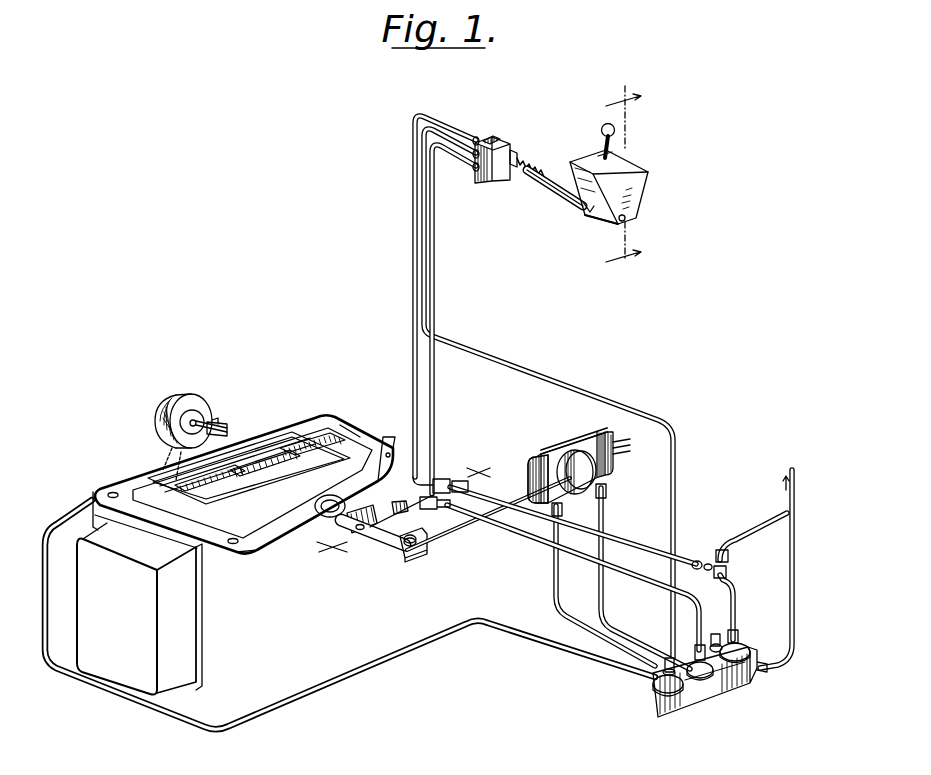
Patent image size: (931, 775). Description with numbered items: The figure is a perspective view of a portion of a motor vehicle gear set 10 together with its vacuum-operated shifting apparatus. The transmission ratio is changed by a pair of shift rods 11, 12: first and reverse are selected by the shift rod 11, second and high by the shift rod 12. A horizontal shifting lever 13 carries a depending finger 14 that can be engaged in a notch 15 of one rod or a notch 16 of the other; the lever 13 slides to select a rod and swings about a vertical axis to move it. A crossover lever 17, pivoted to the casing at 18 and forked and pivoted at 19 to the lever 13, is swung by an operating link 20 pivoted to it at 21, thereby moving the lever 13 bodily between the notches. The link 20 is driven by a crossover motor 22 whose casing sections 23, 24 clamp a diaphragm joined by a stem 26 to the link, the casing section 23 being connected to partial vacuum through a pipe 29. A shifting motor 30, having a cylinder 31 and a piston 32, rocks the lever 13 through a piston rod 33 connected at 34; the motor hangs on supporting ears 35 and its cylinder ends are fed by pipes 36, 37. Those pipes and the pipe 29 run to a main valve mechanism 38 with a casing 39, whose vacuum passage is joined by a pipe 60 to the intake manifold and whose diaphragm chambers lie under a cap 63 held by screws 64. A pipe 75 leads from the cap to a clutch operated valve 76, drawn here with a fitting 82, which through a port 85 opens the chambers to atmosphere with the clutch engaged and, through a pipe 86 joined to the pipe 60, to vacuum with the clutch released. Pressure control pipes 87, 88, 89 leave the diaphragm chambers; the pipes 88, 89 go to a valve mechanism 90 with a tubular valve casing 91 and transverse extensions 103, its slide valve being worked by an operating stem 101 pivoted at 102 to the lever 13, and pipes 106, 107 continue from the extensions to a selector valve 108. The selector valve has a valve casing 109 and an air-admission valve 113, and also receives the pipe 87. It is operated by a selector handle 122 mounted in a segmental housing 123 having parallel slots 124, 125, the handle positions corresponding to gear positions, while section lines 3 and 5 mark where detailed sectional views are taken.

The section line 3- 3 is at (623, 174).
The section line 5- 5 is at (409, 522).
The vehicle gear set 10 is at (298, 427).
The shift rod 11 is at (238, 548).
The shift rod 12 is at (172, 530).
The shifting lever 13 is at (350, 538).
The depending finger 14 is at (250, 488).
The notch 15 is at (272, 548).
The notch 16 is at (230, 480).
The crossover lever 17 is at (355, 433).
The pivot 18 is at (392, 440).
The pivotal connection 19 is at (300, 535).
The operating link 20 is at (262, 445).
The pivotal connection 21 is at (346, 502).
The crossover motor 22 is at (191, 386).
The casing section 23 is at (204, 398).
The casing section 24 is at (165, 400).
The stem 26 is at (222, 422).
The pipe 29 is at (58, 524).
The shifting motor 30 is at (581, 435).
The cylinder 31 is at (548, 452).
The piston 32 is at (615, 466).
The piston rod 33 is at (470, 525).
The connection 34 is at (405, 558).
The supporting ears 35 is at (618, 446).
The pipe 36 is at (550, 565).
The pipe 37 is at (604, 512).
The main valve mechanism 38 is at (705, 712).
The casing 39 is at (725, 692).
The pipe 60 is at (790, 572).
The cap 63 is at (745, 655).
The screws 64 is at (658, 682).
The pipe 75 is at (726, 571).
The clutch operated valve 76 is at (741, 548).
The fitting 82 is at (695, 563).
The port 85 is at (707, 553).
The pipe 86 is at (733, 530).
The pressure control pipe 87 is at (428, 188).
The pressure control pipe 88 is at (697, 608).
The pressure control pipe 89 is at (737, 609).
The valve mechanism 90 is at (436, 478).
The tubular valve casing 91 is at (470, 486).
The operating stem 101 is at (401, 513).
The pivotal connection 102 is at (362, 532).
The transverse extensions 103 is at (465, 487).
The pipe 106 is at (414, 377).
The pipe 107 is at (436, 382).
The selector valve 108 is at (497, 134).
The valve casing 109 is at (489, 134).
The valve 113 is at (511, 148).
The selector handle 122 is at (603, 144).
The segmental housing 123 is at (648, 193).
The slot 124 is at (588, 182).
The slot 125 is at (594, 165).